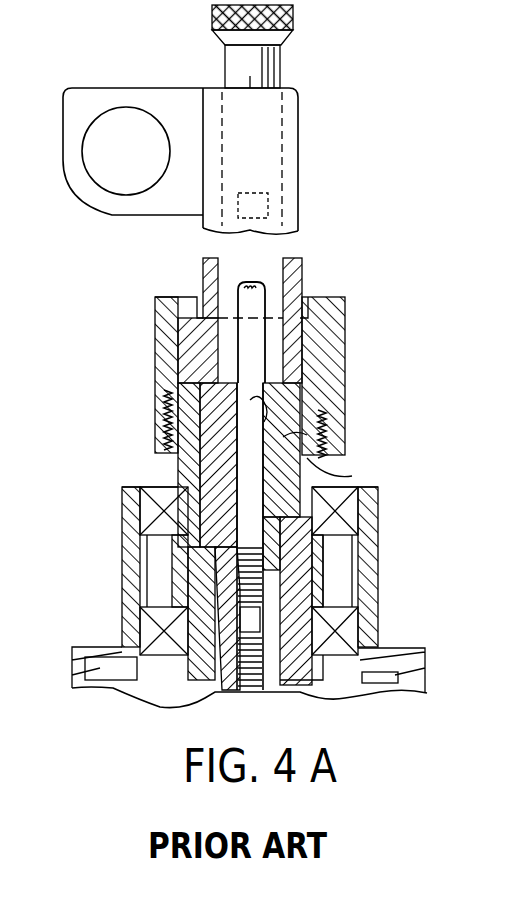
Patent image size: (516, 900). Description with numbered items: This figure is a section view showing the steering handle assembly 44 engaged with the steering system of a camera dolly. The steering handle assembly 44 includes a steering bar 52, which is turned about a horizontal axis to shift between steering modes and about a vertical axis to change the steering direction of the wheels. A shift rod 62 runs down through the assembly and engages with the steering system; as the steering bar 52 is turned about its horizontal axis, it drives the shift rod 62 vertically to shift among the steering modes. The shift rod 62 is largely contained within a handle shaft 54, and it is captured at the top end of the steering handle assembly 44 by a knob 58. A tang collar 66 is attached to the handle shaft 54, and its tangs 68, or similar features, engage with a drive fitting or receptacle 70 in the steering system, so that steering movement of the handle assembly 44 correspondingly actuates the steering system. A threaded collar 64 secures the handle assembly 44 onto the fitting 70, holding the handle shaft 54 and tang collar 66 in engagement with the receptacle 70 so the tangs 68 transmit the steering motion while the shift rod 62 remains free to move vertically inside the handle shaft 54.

The steering handle assembly 44 is at (112, 72).
The steering bar 52 is at (100, 155).
The handle shaft 54 is at (294, 280).
The knob 58 is at (282, 68).
The shift rod 62 is at (260, 290).
The threaded collar 64 is at (158, 305).
The tang collar 66 is at (272, 374).
The tangs 68 is at (250, 398).
The drive fitting or receptacle 70 is at (345, 478).